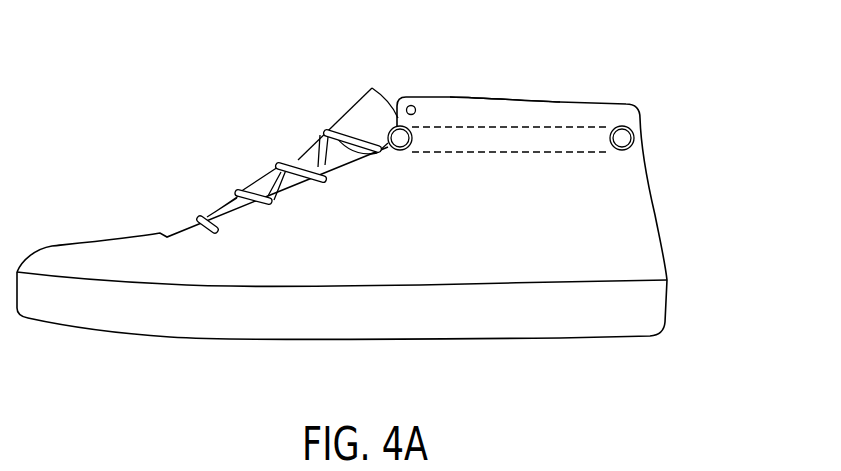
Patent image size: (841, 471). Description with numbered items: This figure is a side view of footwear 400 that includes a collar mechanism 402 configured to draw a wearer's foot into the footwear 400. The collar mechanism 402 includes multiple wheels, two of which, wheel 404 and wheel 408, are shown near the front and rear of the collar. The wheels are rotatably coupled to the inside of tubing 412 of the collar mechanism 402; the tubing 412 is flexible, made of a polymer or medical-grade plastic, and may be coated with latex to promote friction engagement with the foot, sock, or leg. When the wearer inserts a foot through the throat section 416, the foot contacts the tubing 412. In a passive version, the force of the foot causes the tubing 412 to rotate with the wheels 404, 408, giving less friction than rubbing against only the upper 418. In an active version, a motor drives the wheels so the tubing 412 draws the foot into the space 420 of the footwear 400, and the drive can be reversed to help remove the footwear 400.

The footwear 400 is at (650, 190).
The collar mechanism 402 is at (652, 126).
The wheel 404 is at (399, 130).
The wheel 408 is at (622, 133).
The tubing 412 is at (462, 134).
The throat section 416 is at (520, 84).
The upper 418 is at (317, 213).
The space 420 is at (329, 270).